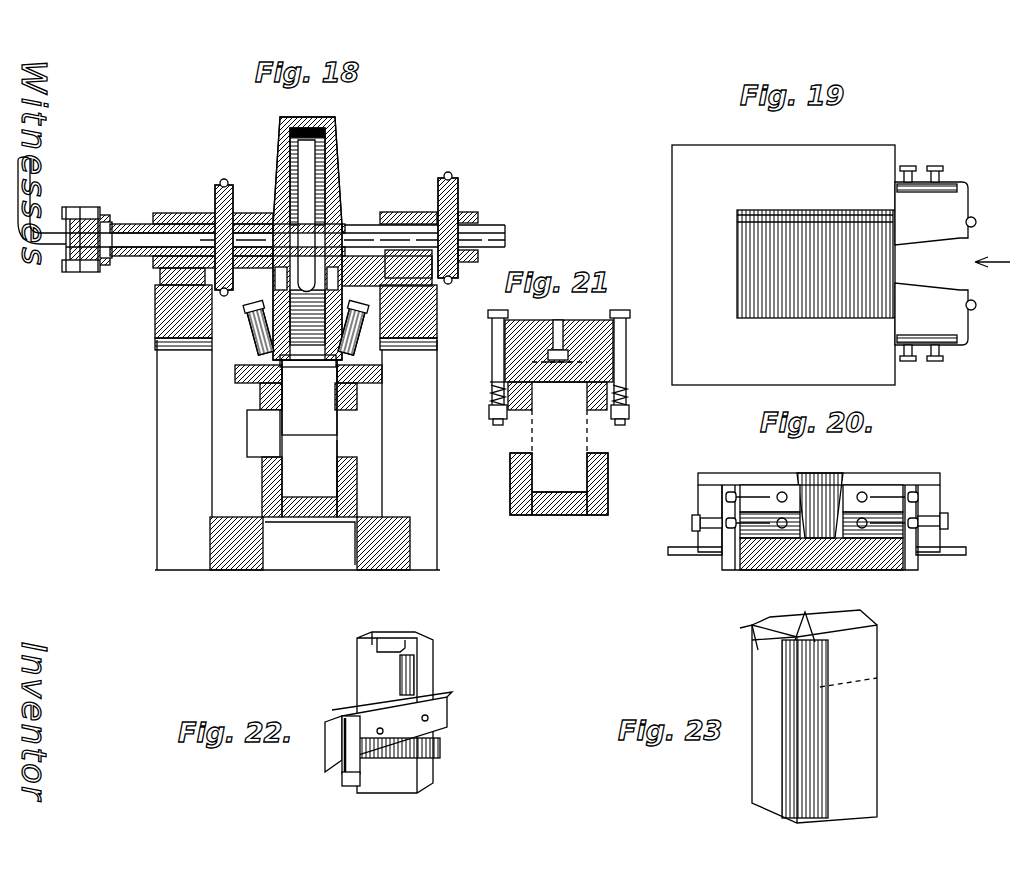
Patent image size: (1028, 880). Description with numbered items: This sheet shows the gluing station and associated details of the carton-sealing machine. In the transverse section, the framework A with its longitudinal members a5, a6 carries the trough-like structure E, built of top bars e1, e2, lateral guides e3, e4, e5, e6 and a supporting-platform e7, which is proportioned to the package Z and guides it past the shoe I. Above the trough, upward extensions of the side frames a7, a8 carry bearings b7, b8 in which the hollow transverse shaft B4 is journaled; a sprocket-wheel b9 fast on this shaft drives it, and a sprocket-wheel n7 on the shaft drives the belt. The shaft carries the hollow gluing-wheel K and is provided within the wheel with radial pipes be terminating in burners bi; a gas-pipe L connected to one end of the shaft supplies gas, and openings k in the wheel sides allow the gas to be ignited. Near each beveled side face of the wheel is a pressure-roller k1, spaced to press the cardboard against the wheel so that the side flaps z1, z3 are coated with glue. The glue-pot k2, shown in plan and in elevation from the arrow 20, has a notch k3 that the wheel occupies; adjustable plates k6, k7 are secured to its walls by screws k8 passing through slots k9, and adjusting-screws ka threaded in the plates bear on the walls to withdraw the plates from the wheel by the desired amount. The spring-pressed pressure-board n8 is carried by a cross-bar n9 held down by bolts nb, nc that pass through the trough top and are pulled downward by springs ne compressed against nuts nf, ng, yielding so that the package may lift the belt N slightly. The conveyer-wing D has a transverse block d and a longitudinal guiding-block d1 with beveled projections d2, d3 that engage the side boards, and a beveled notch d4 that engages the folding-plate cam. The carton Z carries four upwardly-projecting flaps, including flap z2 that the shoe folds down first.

In FIG. 18, the gas-pipe L is at (33, 180).
In FIG. 18, the transverse shaft B4 is at (507, 236).
In FIG. 18, the bearing b8 is at (178, 213).
In FIG. 18, the sprocket-wheel n7 is at (226, 180).
In FIG. 18, the side frame a7 is at (155, 316).
In FIG. 18, the side frame a8 is at (437, 316).
In FIG. 18, the flap z3 is at (263, 349).
In FIG. 23, the flap z3 is at (816, 622).
In FIG. 18, the flap z1 is at (345, 352).
In FIG. 23, the flap z1 is at (848, 666).
In FIG. 18, the gluing-wheel K is at (340, 160).
In FIG. 18, the burner bi is at (338, 135).
In FIG. 18, the opening k is at (275, 290).
In FIG. 18, the radial pipe be is at (322, 212).
In FIG. 18, the pressure-roller k1 is at (360, 320).
In FIG. 18, the longitudinal bar e2 is at (238, 373).
In FIG. 21, the longitudinal bar e2 is at (492, 376).
In FIG. 18, the longitudinal bar e1 is at (382, 371).
In FIG. 21, the longitudinal bar e1 is at (630, 369).
In FIG. 18, the lateral guide e3 is at (212, 513).
In FIG. 21, the lateral guide e3 is at (534, 397).
In FIG. 18, the lateral guide e4 is at (357, 396).
In FIG. 21, the lateral guide e4 is at (587, 397).
In FIG. 18, the shoe I is at (263, 433).
In FIG. 18, the lateral guide e5 is at (262, 474).
In FIG. 21, the lateral guide e5 is at (533, 470).
In FIG. 18, the lateral guide e6 is at (357, 474).
In FIG. 21, the lateral guide e6 is at (608, 470).
In FIG. 18, the supporting-platform e7 is at (302, 497).
In FIG. 21, the supporting-platform e7 is at (553, 515).
In FIG. 18, the package Z is at (309, 428).
In FIG. 23, the package Z is at (814, 724).
In FIG. 18, the trough-like structure E is at (345, 462).
In FIG. 21, the trough-like structure E is at (588, 455).
In FIG. 18, the framework A is at (297, 455).
In FIG. 18, the longitudinal member a5 is at (238, 572).
In FIG. 18, the longitudinal member a6 is at (380, 572).
In FIG. 18, the bearing b7 is at (408, 227).
In FIG. 18, the sprocket-wheel b9 is at (458, 194).
In FIG. 21, the bolt nb is at (492, 340).
In FIG. 21, the bolt nc is at (613, 330).
In FIG. 21, the cross-bar n9 is at (560, 320).
In FIG. 21, the pressure-board n8 is at (571, 346).
In FIG. 21, the spring ne is at (627, 394).
In FIG. 21, the nut ng is at (492, 418).
In FIG. 21, the nut nf is at (629, 414).
In FIG. 21, the belt N is at (538, 370).
In FIG. 19, the glue-pot k2 is at (783, 265).
In FIG. 20, the glue-pot k2 is at (817, 508).
In FIG. 19, the notch k3 is at (925, 264).
In FIG. 20, the notch k3 is at (838, 490).
In FIG. 19, the adjustable plate k7 is at (970, 196).
In FIG. 20, the adjustable plate k7 is at (890, 525).
In FIG. 19, the adjustable plate k6 is at (970, 330).
In FIG. 20, the adjustable plate k6 is at (775, 530).
In FIG. 19, the adjusting-screw ka is at (936, 360).
In FIG. 20, the adjusting-screw ka is at (940, 518).
In FIG. 19, the screw k8 is at (977, 304).
In FIG. 20, the screw k8 is at (866, 495).
In FIG. 20, the slot k9 is at (870, 512).
In FIG. 19, the arrow 20 is at (992, 253).
In FIG. 23, the flap z2 is at (866, 620).
In FIG. 22, the conveyer-wing D is at (425, 676).
In FIG. 22, the transverse vertical block d is at (392, 694).
In FIG. 22, the beveled notch d4 is at (400, 645).
In FIG. 22, the longitudinal guiding-block d1 is at (447, 736).
In FIG. 22, the beveled projection d2 is at (350, 716).
In FIG. 22, the projection d3 is at (348, 786).